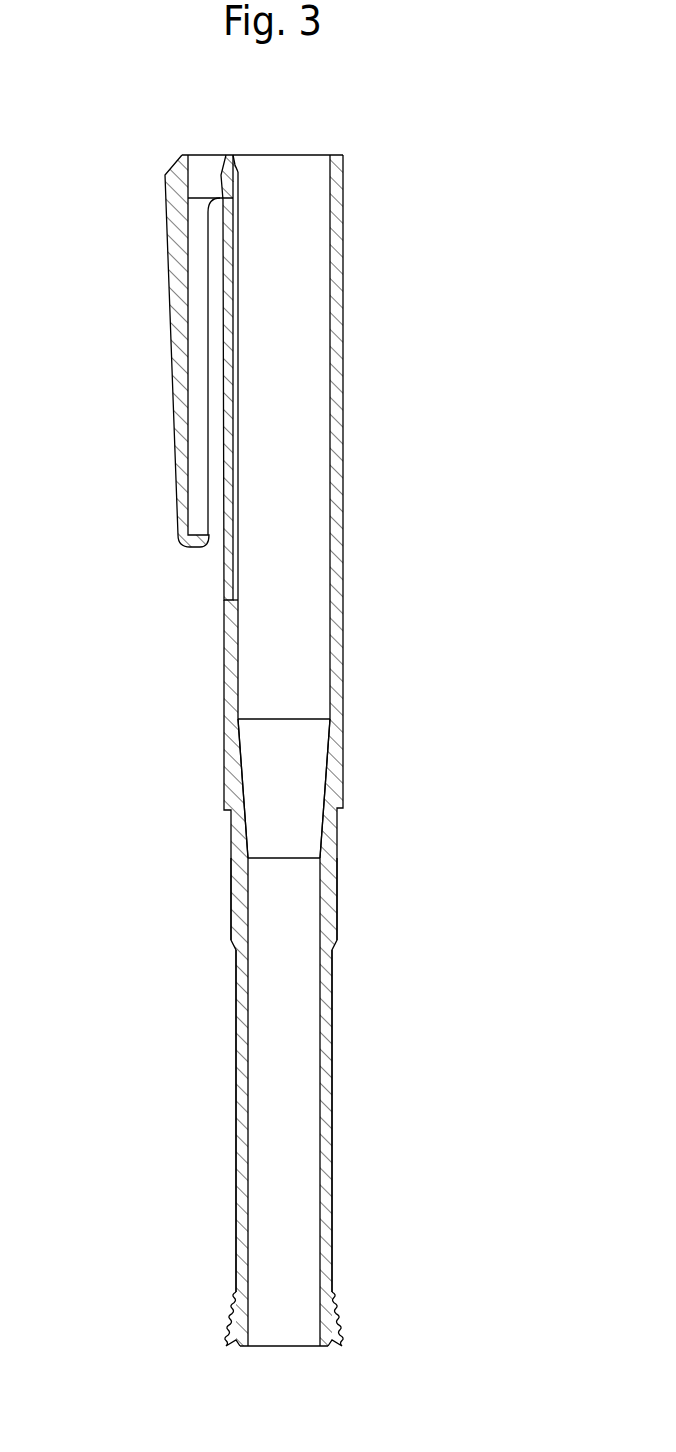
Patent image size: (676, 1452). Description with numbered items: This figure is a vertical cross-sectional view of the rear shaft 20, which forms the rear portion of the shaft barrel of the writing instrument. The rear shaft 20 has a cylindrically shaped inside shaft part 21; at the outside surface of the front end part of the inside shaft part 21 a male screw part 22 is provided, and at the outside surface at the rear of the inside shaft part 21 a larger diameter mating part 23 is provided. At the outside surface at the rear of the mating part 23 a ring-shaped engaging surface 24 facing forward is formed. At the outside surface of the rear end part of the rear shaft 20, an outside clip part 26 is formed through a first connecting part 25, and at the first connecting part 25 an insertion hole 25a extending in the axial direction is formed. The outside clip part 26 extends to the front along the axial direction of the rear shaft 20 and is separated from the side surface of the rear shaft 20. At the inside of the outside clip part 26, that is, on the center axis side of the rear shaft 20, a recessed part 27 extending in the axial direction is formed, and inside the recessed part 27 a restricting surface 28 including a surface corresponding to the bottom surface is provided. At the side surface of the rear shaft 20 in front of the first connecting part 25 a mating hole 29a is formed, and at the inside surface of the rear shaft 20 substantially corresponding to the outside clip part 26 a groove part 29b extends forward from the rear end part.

The rear shaft 20 is at (430, 704).
The inside shaft part 21 is at (332, 1142).
The male screw part 22 is at (336, 1315).
The mating part 23 is at (337, 905).
The engaging surface 24 is at (337, 810).
The first connecting part 25 is at (242, 137).
The insertion hole 25a is at (208, 147).
The outside clip part 26 is at (246, 351).
The recessed part 27 is at (202, 330).
The restricting surface 28 is at (185, 468).
The mating hole 29a is at (226, 215).
The groove part 29b is at (239, 421).